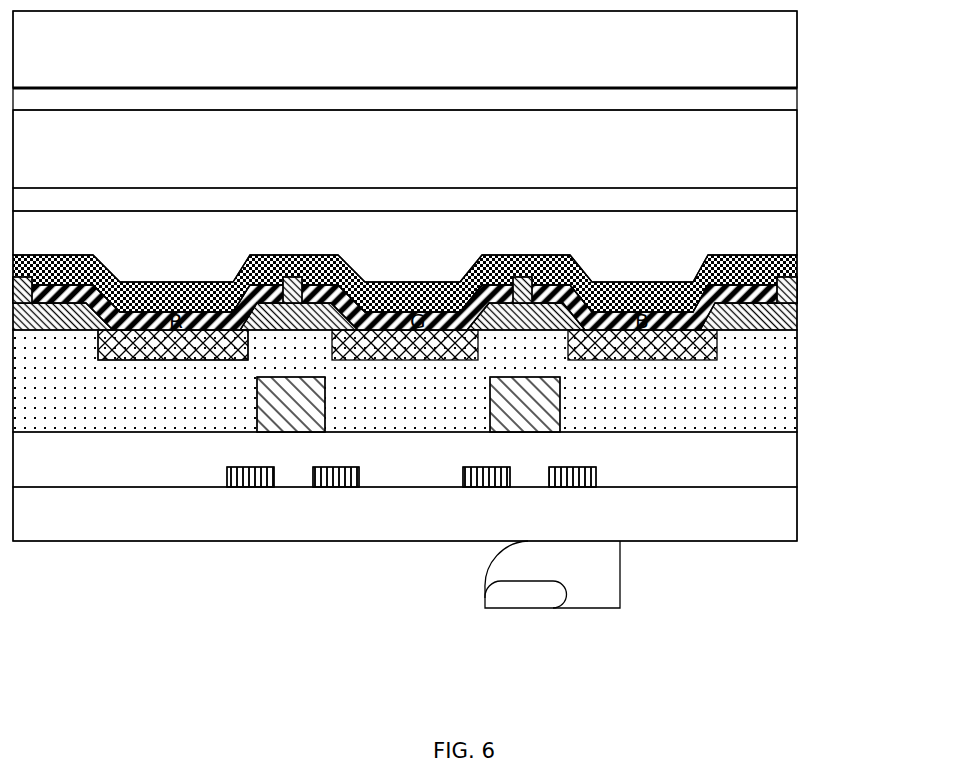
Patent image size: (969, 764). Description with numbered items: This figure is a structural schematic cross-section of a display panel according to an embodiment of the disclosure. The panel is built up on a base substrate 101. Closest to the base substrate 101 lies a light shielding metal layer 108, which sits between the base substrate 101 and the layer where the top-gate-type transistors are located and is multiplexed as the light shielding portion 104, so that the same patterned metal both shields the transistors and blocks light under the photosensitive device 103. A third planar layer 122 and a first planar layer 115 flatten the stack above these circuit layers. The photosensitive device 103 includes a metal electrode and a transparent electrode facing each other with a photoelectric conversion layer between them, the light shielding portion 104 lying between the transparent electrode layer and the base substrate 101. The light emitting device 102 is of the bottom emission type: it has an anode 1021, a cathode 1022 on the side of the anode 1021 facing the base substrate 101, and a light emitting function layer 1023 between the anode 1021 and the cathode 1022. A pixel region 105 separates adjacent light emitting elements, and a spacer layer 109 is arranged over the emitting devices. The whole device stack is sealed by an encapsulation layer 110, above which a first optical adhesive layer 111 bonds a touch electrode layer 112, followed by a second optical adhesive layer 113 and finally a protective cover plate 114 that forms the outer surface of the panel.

The base substrate 101 is at (780, 513).
The light emitting device 102 is at (405, 468).
The anode 1021 is at (221, 301).
The cathode 1022 is at (173, 318).
The light emitting function layer 1023 is at (120, 318).
The photosensitive device 103 is at (293, 405).
The light shielding portion 104 is at (596, 477).
The light shielding metal layer 108 is at (596, 477).
The pixel definition layer 105 is at (780, 315).
The spacer layer 109 is at (780, 288).
The encapsulation layer 110 is at (780, 229).
The first optical adhesive layer 111 is at (780, 200).
The touch electrode layer 112 is at (780, 151).
The second optical adhesive layer 113 is at (780, 100).
The protective cover plate 114 is at (780, 50).
The first planar layer 115 is at (780, 380).
The third planar layer 122 is at (780, 442).